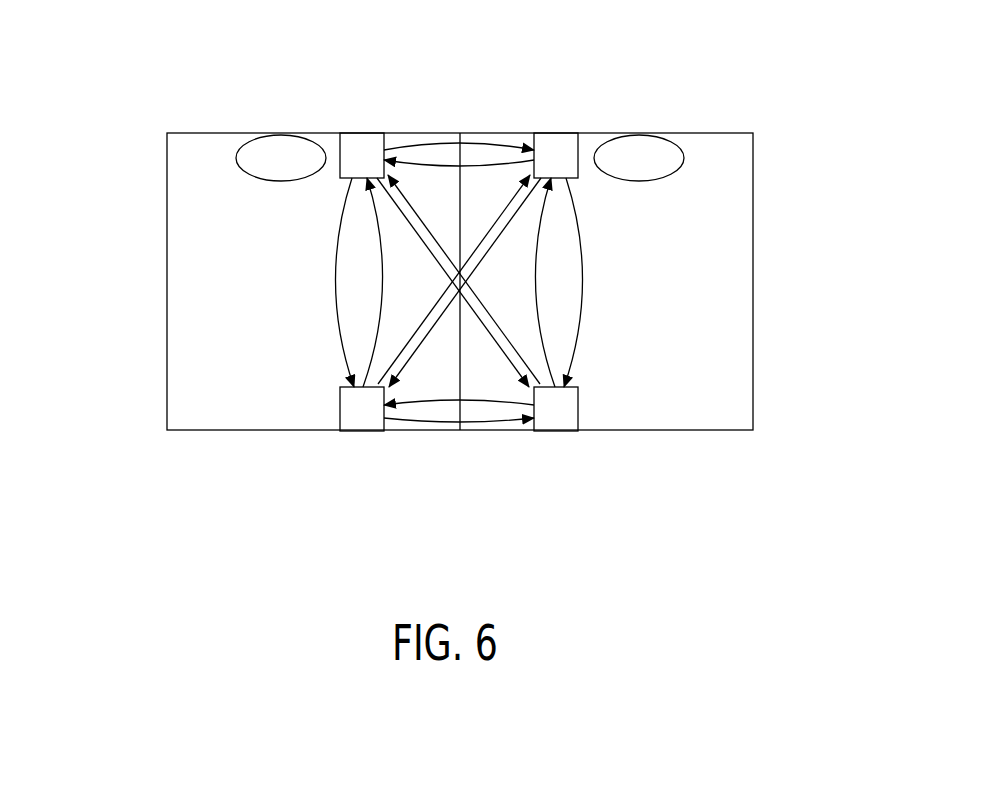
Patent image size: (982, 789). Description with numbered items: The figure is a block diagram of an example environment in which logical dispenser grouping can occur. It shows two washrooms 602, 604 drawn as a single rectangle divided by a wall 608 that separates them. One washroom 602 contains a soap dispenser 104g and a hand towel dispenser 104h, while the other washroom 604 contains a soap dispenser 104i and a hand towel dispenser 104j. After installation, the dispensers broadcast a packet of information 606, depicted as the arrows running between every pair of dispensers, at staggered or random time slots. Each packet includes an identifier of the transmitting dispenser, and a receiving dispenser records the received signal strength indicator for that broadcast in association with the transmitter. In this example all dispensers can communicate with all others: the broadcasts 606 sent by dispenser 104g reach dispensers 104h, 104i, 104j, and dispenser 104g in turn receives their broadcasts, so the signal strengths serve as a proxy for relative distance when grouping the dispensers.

The washroom 602 is at (740, 337).
The washroom 604 is at (183, 242).
The packet of information 606 is at (381, 299).
The wall 608 is at (475, 215).
The soap dispenser 104g is at (362, 143).
The hand towel dispenser 104h is at (360, 423).
The soap dispenser 104i is at (555, 152).
The hand towel dispenser 104j is at (557, 423).